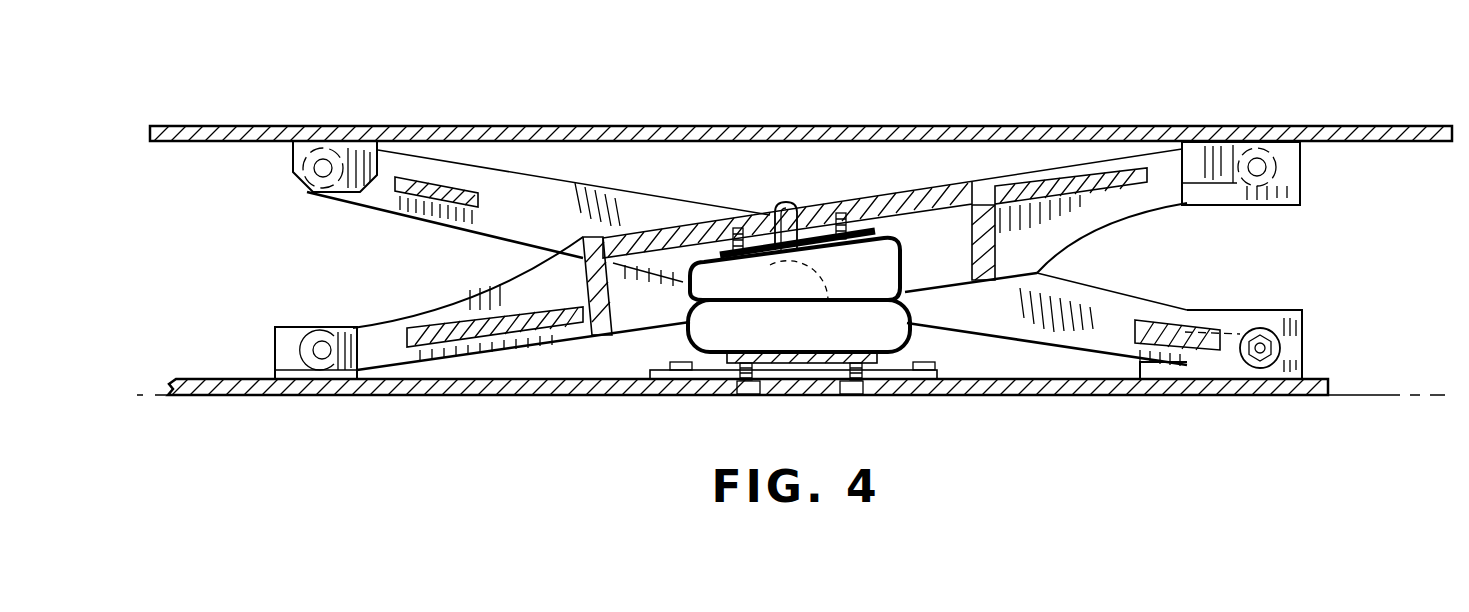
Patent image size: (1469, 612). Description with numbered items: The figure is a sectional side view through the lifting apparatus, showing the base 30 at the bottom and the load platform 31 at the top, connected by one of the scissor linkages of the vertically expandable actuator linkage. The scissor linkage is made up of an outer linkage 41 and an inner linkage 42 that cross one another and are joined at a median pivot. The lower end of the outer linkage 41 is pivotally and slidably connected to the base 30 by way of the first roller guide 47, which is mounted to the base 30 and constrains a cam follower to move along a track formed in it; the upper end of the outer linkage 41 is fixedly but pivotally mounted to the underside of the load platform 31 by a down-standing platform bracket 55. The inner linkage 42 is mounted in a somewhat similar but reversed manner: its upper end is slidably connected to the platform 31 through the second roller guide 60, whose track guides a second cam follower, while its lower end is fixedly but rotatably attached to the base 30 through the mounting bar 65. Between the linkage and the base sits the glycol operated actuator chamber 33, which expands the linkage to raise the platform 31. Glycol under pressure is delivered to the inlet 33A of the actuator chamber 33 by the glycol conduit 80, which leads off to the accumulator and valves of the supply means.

The base 30 is at (520, 397).
The load platform 31 is at (735, 126).
The glycol operated actuator chamber 33 is at (827, 303).
The inlet 33A is at (799, 326).
The outer linkage 41 is at (1097, 297).
The inner linkage 42 is at (1113, 215).
The first roller guide 47 is at (1283, 308).
The platform bracket 55 is at (345, 195).
The second roller guide 60 is at (1300, 205).
The mounting bar 65 is at (292, 332).
The glycol conduit 80 is at (790, 207).